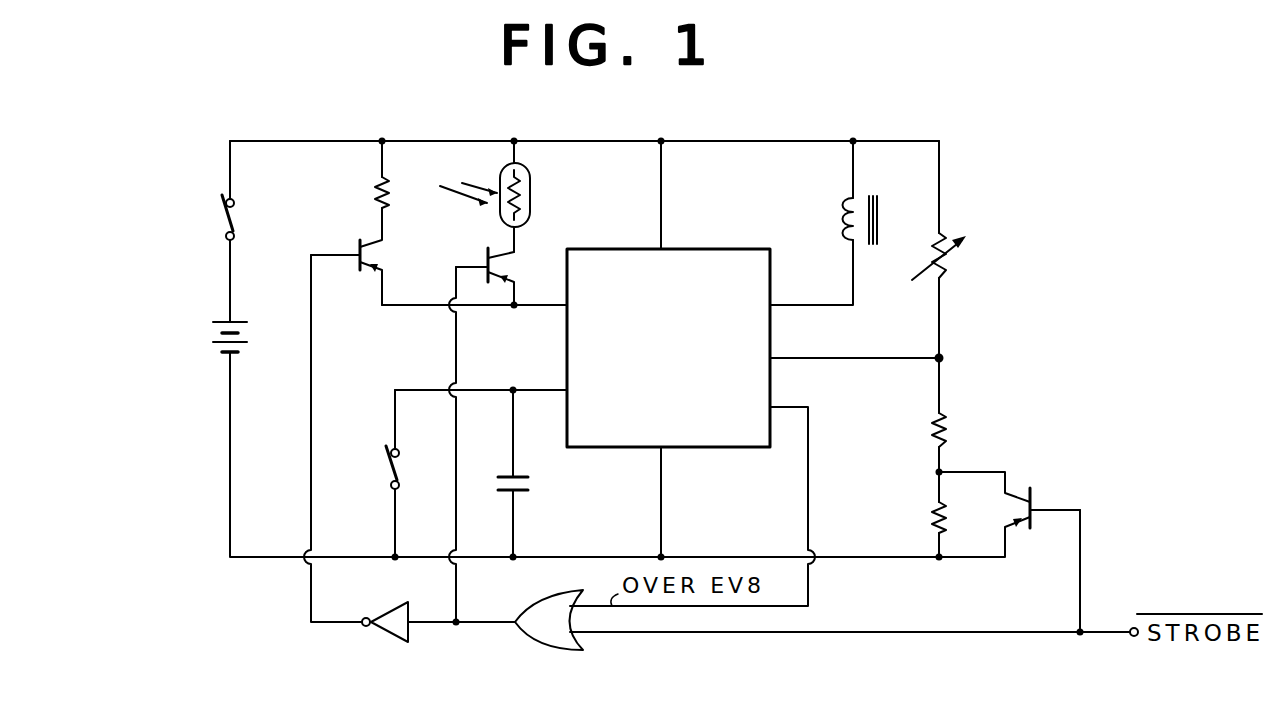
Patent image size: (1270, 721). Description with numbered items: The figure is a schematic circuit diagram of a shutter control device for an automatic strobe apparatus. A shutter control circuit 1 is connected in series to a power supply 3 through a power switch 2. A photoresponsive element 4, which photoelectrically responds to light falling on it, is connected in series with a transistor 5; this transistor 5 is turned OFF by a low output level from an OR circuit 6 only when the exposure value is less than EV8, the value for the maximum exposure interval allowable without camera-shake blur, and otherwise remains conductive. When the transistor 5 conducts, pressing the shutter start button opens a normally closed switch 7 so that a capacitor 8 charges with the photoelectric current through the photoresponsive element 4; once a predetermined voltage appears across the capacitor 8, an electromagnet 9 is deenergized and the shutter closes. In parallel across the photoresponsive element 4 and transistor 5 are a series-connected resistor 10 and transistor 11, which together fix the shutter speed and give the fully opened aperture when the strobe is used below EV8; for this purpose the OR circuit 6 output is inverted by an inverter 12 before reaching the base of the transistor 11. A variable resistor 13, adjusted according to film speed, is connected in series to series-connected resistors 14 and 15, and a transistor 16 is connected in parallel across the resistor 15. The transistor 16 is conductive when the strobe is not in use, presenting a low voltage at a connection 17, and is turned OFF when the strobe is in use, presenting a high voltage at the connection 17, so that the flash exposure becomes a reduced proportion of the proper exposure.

The shutter control circuit 1 is at (725, 447).
The power switch 2 is at (222, 218).
The power supply 3 is at (213, 333).
The photoresponsive element 4 is at (532, 191).
The transistor 5 is at (484, 256).
The OR circuit 6 is at (548, 648).
The normally closed switch 7 is at (386, 468).
The capacitor 8 is at (531, 484).
The electromagnet 9 is at (843, 217).
The resistor 10 is at (373, 185).
The transistor 11 is at (357, 266).
The inverter 12 is at (410, 633).
The variable resistor 13 is at (946, 258).
The resistor 14 is at (928, 425).
The resistor 15 is at (928, 510).
The transistor 16 is at (1033, 496).
The connection 17 is at (943, 357).